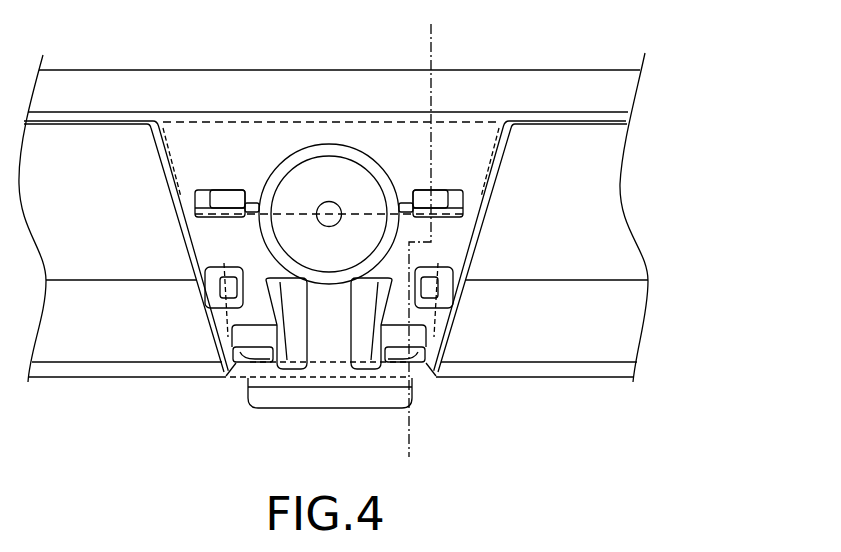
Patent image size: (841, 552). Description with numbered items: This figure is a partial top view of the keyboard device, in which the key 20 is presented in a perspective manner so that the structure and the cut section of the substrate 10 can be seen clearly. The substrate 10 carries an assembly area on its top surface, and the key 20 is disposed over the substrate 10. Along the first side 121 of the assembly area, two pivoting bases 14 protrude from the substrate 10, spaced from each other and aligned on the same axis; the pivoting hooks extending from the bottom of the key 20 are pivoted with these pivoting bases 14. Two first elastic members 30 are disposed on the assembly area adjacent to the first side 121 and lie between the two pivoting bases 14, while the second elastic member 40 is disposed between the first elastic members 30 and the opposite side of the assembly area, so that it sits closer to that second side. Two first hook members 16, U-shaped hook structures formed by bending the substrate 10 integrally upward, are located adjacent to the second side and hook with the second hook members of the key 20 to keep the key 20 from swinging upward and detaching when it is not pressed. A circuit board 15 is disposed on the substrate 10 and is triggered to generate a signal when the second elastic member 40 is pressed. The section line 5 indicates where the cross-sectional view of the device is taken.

The substrate 10 is at (70, 378).
The pivoting base 14 is at (240, 350).
The circuit board 15 is at (247, 385).
The first hook member 16 is at (182, 197).
The key 20 is at (251, 121).
The first elastic member 30 is at (290, 345).
The second elastic member 40 is at (330, 155).
The first side 121 is at (275, 398).
The section line 5- 5 is at (433, 24).